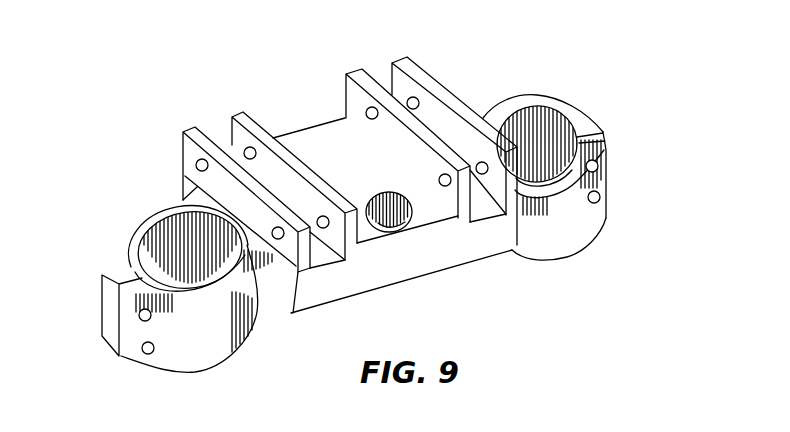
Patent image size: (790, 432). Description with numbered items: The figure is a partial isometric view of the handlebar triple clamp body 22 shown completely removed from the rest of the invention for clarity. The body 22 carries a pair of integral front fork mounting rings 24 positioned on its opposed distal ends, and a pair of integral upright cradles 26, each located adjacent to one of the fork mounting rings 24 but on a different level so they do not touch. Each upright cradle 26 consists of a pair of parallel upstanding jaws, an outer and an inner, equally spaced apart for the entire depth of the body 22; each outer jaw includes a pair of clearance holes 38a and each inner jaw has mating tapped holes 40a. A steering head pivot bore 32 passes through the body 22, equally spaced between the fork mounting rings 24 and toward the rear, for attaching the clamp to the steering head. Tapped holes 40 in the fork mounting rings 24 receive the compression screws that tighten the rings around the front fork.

The handlebar triple clamp body 22 is at (181, 198).
The front fork mounting rings 24 is at (136, 250).
The integral upright cradles 26 is at (183, 128).
The steering head pivot bore 32 is at (393, 230).
The clearance holes 38a is at (197, 165).
The tapped holes 40a is at (250, 148).
The tapped holes 40 is at (141, 320).